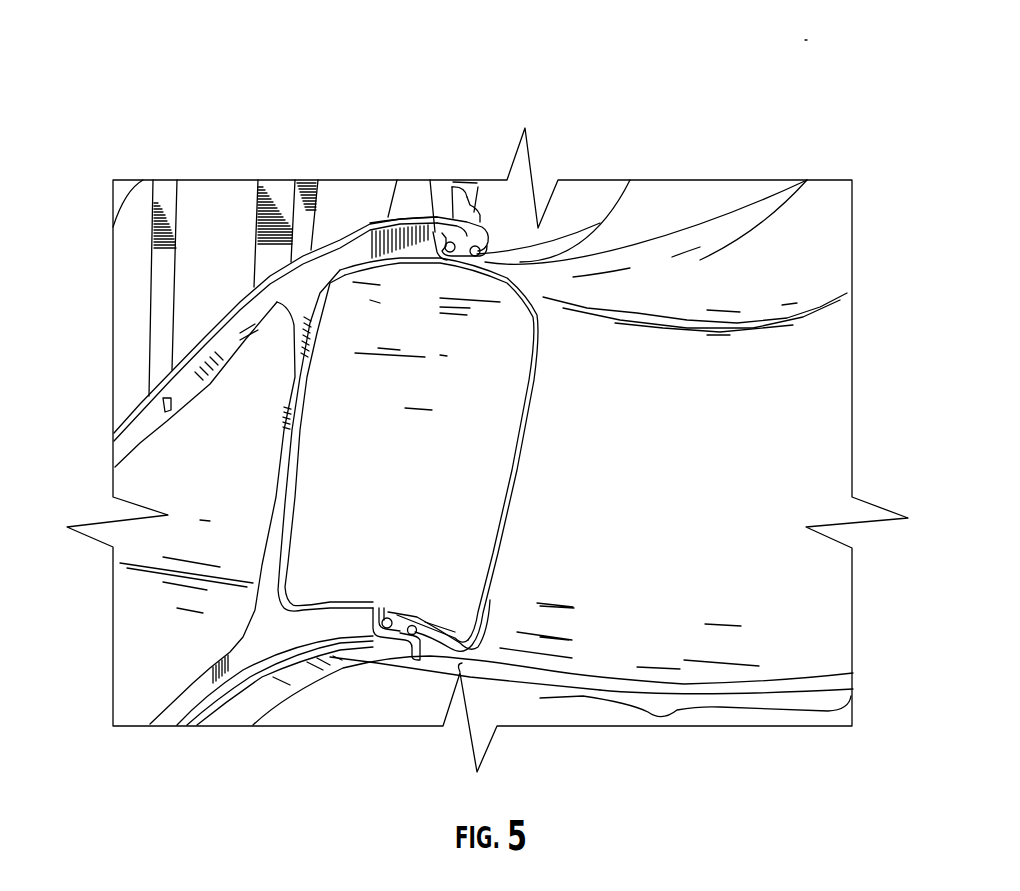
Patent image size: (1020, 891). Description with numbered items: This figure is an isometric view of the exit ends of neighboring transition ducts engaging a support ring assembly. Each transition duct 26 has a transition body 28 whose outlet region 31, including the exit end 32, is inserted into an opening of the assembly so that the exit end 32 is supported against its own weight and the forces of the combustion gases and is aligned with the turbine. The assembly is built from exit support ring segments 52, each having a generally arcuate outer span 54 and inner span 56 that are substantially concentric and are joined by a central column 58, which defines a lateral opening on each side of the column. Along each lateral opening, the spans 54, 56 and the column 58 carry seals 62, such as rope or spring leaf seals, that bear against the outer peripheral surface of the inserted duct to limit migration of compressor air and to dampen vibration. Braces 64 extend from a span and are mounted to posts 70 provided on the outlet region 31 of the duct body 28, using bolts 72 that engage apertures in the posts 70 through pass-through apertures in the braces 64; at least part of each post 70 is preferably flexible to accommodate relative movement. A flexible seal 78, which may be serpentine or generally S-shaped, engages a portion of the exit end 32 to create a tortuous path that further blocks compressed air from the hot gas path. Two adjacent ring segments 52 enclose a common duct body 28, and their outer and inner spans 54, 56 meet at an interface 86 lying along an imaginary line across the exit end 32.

The transition duct 26 is at (793, 388).
The transition body 28 is at (627, 488).
The outlet region 31 is at (662, 716).
The exit end 32 is at (447, 635).
The exit support ring segment 52 is at (302, 696).
The outer span 54 is at (318, 270).
The inner span 56 is at (333, 612).
The central column 58 is at (280, 507).
The seal 62 is at (517, 268).
The brace 64 is at (356, 200).
The post 70 is at (452, 193).
The bolt 72 is at (473, 220).
The flexible seal 78 is at (485, 245).
The interface 86 is at (168, 396).